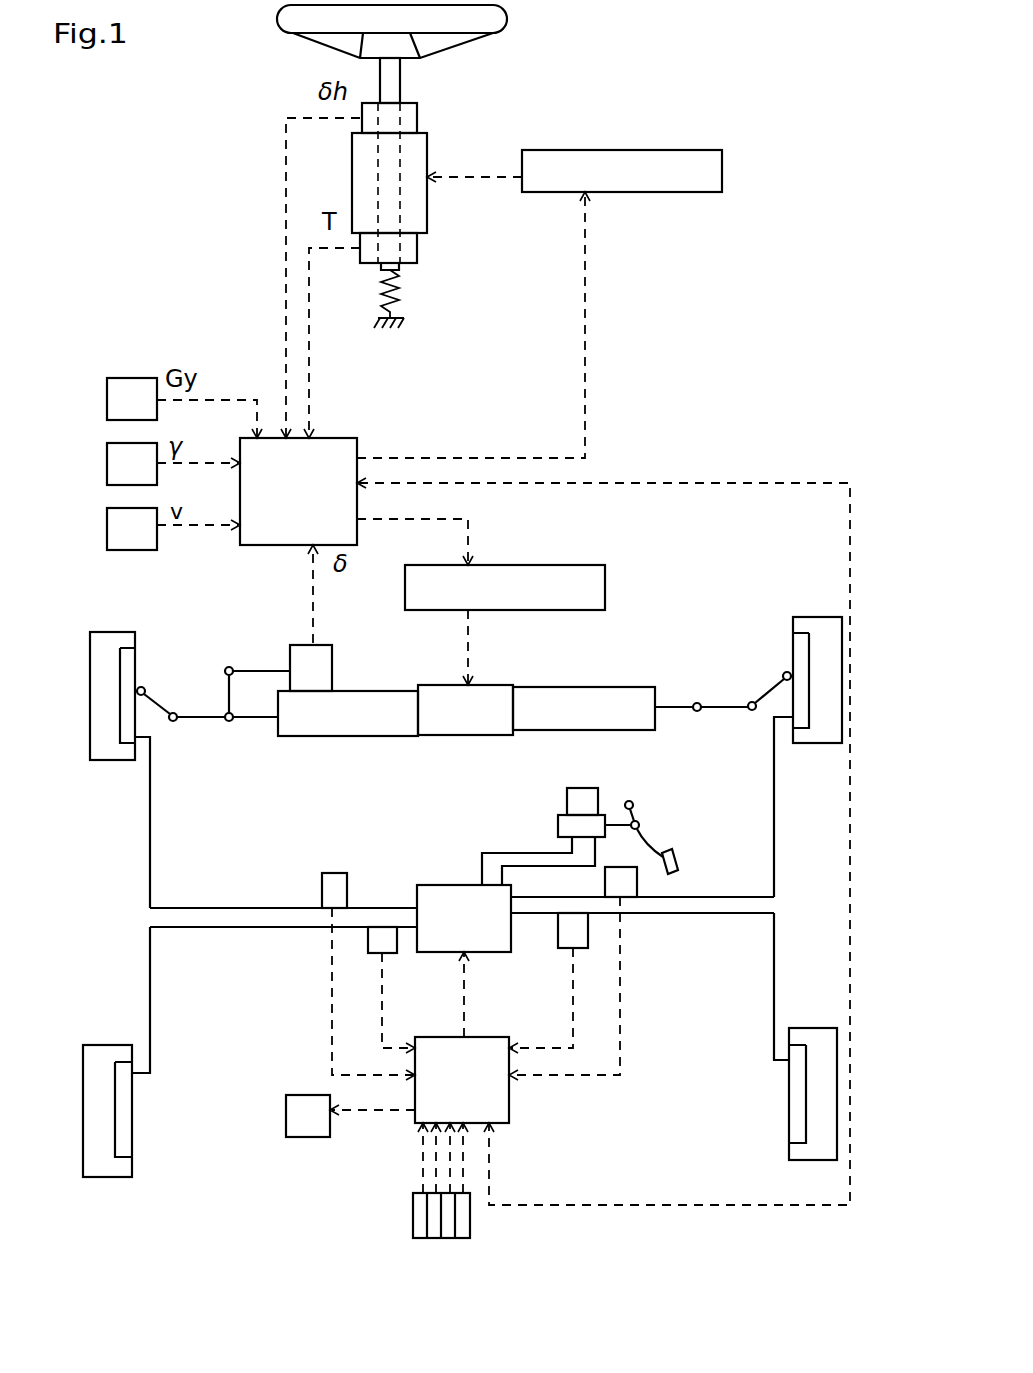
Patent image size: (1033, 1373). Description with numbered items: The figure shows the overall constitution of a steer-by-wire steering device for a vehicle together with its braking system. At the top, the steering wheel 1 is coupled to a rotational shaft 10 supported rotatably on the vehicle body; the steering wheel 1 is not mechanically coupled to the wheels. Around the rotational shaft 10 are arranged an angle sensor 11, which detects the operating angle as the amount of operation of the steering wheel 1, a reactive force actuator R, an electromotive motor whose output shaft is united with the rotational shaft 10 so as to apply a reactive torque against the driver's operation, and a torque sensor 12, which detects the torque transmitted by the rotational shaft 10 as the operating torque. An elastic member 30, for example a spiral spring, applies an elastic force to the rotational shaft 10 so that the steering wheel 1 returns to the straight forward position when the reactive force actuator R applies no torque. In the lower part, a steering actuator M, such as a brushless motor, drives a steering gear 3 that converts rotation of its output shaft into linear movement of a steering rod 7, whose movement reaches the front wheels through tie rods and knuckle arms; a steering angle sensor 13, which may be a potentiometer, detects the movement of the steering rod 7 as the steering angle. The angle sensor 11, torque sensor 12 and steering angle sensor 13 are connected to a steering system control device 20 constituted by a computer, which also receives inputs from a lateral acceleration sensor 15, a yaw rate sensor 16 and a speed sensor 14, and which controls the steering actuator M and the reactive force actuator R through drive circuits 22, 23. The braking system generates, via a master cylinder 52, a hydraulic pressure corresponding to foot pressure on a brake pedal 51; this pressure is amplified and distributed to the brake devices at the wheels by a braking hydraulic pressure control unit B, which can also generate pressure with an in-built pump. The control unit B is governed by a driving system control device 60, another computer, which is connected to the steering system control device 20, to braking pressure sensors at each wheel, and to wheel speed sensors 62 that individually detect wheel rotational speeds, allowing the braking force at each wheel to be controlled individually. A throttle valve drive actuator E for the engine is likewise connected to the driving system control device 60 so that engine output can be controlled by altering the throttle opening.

The steering wheel 1 is at (500, 18).
The rotational shaft 10 is at (395, 78).
The angle sensor 11 is at (412, 118).
The reactive force actuator R is at (417, 154).
The torque sensor 12 is at (410, 250).
The elastic member 30 is at (400, 298).
The drive circuit 23 is at (712, 190).
The lateral acceleration sensor 15 is at (107, 402).
The yaw rate sensor 16 is at (107, 466).
The speed sensor 14 is at (107, 530).
The steering system control device 20 is at (340, 447).
The drive circuit 22 is at (580, 571).
The steering gear 3 is at (345, 723).
The steering actuator M is at (468, 723).
The steering angle sensor 13 is at (323, 661).
The steering rod 7 is at (247, 719).
The braking hydraulic pressure control unit B is at (443, 905).
The master cylinder 52 is at (558, 829).
The brake pedal 51 is at (680, 852).
The driving system control device 60 is at (483, 1050).
The throttle valve drive actuator E is at (305, 1131).
The wheel speed sensors 62 is at (456, 1215).